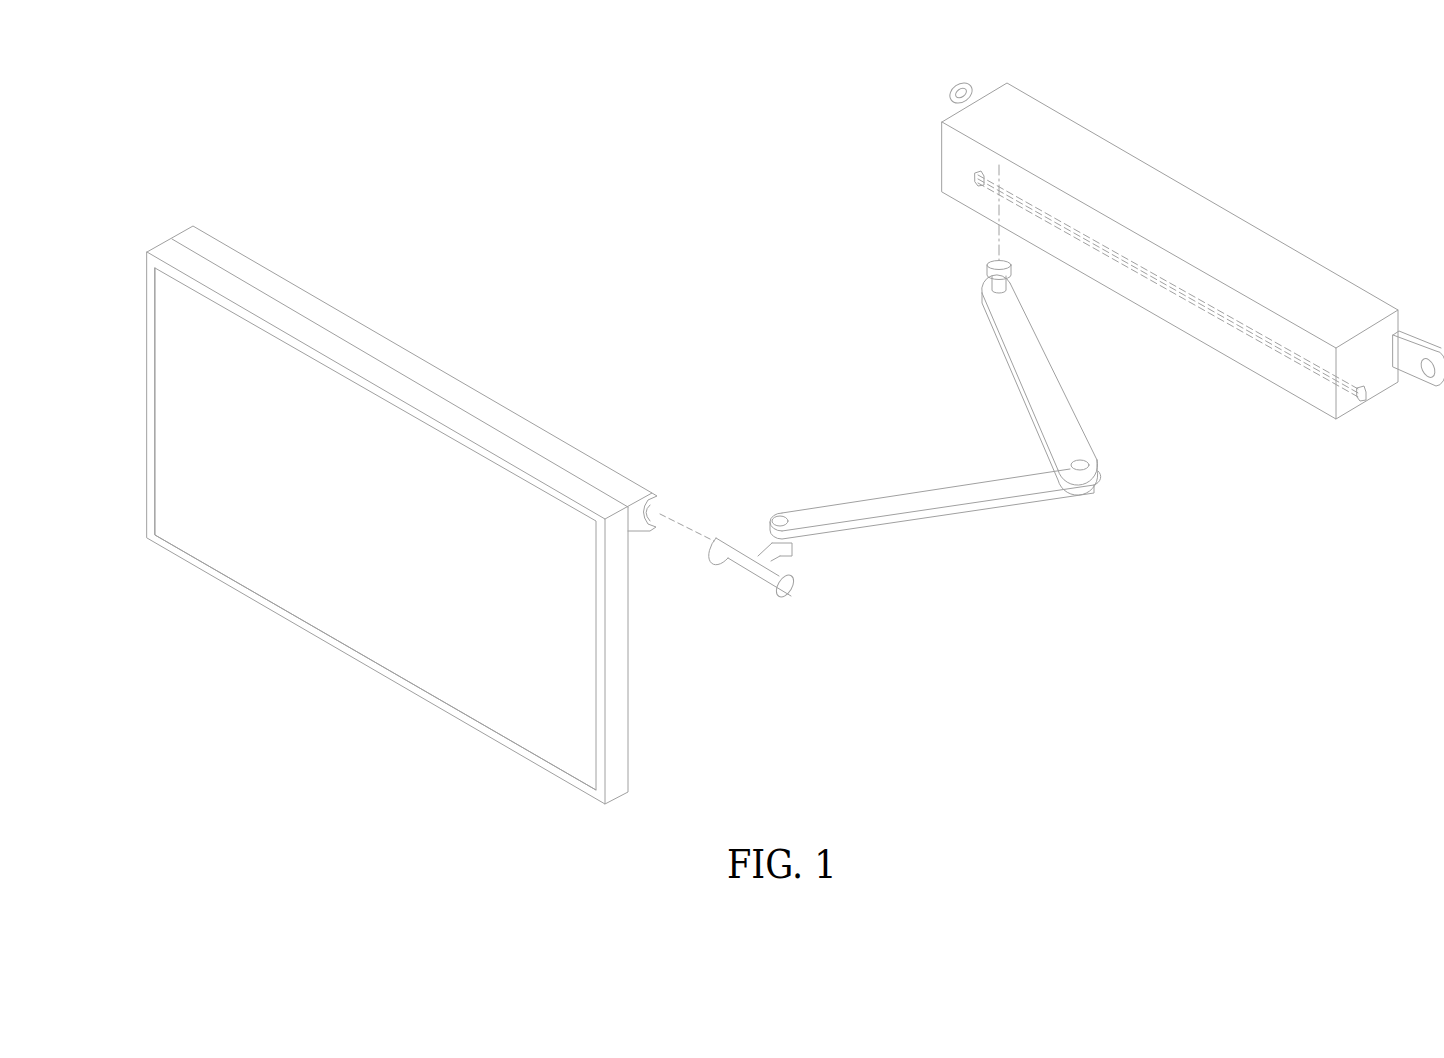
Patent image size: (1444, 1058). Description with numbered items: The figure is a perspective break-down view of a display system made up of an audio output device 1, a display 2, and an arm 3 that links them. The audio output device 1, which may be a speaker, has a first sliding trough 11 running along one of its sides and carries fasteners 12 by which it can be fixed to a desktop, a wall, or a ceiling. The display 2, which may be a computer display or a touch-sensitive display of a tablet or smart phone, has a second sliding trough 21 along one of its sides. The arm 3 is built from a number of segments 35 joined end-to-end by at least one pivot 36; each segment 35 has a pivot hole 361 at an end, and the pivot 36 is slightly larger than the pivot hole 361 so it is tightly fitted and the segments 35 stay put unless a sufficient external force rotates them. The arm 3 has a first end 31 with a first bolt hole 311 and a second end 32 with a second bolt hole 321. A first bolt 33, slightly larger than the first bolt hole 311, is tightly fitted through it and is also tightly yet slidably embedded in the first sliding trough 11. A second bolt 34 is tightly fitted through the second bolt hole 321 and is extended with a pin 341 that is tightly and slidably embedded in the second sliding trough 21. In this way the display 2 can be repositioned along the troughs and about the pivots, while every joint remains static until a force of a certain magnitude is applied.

The audio output device 1 is at (1192, 207).
The first sliding trough 11 is at (1283, 356).
The fasteners 12 is at (950, 90).
The display 2 is at (170, 368).
The second sliding trough 21 is at (654, 513).
The arm 3 is at (1093, 527).
The first end 31 is at (1032, 358).
The first bolt hole 311 is at (1012, 284).
The second end 32 is at (905, 550).
The second bolt hole 321 is at (797, 530).
The first bolt 33 is at (988, 266).
The second bolt 34 is at (780, 512).
The pin 341 is at (752, 576).
The segments 35 is at (1058, 381).
The pivot 36 is at (1099, 468).
The pivot hole 361 is at (1050, 452).